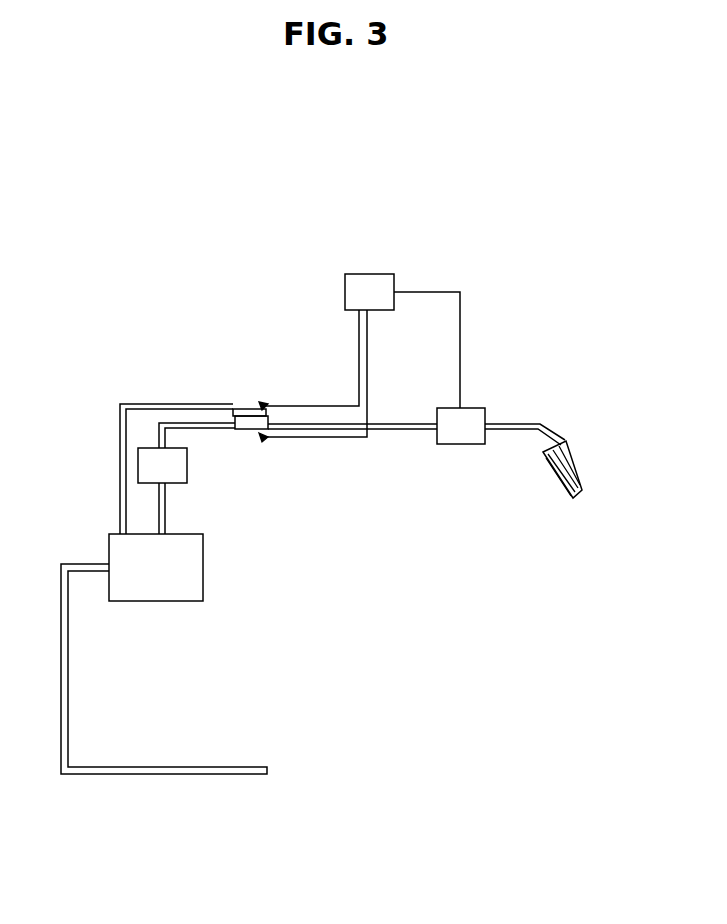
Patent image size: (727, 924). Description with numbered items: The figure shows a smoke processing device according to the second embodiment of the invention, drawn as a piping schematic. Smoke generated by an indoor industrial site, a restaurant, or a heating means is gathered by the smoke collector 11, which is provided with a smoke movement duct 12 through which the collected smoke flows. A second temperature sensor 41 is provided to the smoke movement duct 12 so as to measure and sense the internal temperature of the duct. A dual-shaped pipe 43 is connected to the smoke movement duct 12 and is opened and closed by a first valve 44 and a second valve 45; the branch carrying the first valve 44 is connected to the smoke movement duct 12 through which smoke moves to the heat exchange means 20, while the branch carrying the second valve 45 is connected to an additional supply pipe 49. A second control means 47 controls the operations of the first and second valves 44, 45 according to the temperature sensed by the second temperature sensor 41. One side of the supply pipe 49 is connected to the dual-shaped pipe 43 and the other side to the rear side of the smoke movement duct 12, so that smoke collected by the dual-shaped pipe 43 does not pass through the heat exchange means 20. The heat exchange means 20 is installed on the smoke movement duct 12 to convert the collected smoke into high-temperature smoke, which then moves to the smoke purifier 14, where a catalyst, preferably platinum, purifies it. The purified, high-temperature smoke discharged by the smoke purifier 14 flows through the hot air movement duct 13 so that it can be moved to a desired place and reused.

The smoke collector 11 is at (568, 442).
The smoke movement duct 12 is at (383, 423).
The hot air movement duct 13 is at (111, 774).
The smoke purifier 14 is at (156, 567).
The heat exchange means 20 is at (186, 478).
The second temperature sensor 41 is at (482, 410).
The dual-shaped pipe 43 is at (243, 408).
The first valve 44 is at (265, 439).
The second valve 45 is at (264, 405).
The second control means 47 is at (380, 280).
The supply pipe 49 is at (135, 409).